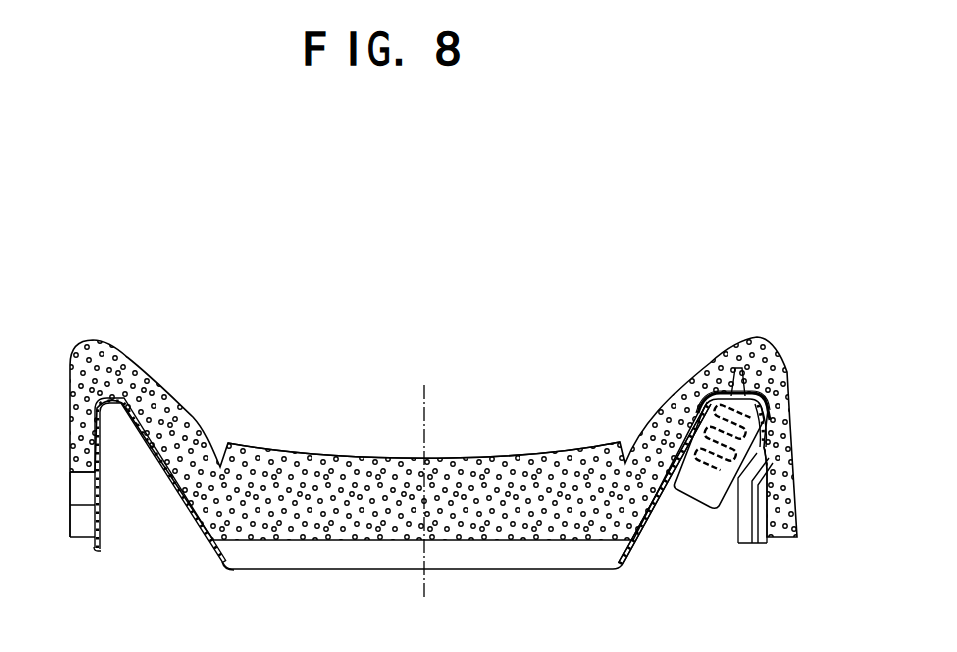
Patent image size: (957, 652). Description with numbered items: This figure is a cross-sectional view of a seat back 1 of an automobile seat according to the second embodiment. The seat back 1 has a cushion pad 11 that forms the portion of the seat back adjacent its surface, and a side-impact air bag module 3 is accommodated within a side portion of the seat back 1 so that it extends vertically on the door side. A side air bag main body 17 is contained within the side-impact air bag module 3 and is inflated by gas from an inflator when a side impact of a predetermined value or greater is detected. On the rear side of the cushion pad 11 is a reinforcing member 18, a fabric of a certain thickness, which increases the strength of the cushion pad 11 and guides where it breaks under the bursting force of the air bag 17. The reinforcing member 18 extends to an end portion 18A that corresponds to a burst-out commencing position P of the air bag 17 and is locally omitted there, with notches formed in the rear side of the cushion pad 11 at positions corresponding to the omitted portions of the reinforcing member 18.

The seat back 1 is at (481, 471).
The cushion pad 11 is at (547, 458).
The reinforcing member 18 is at (637, 541).
The end portion 18A is at (730, 392).
The side-impact air bag module 3 is at (721, 483).
The side air bag main body 17 is at (716, 440).
The burst-out commencing position P is at (729, 396).